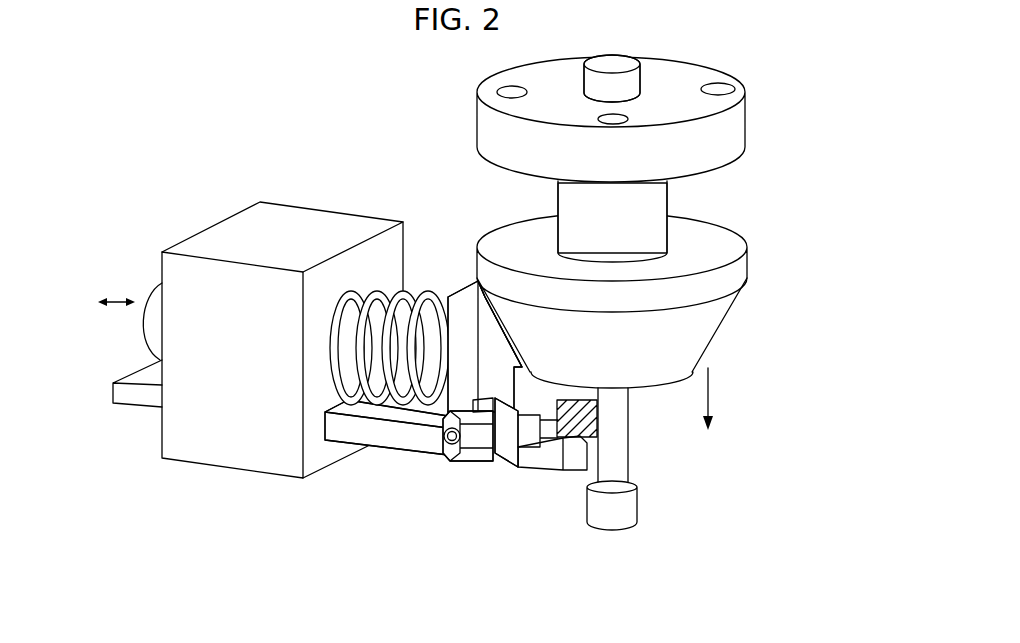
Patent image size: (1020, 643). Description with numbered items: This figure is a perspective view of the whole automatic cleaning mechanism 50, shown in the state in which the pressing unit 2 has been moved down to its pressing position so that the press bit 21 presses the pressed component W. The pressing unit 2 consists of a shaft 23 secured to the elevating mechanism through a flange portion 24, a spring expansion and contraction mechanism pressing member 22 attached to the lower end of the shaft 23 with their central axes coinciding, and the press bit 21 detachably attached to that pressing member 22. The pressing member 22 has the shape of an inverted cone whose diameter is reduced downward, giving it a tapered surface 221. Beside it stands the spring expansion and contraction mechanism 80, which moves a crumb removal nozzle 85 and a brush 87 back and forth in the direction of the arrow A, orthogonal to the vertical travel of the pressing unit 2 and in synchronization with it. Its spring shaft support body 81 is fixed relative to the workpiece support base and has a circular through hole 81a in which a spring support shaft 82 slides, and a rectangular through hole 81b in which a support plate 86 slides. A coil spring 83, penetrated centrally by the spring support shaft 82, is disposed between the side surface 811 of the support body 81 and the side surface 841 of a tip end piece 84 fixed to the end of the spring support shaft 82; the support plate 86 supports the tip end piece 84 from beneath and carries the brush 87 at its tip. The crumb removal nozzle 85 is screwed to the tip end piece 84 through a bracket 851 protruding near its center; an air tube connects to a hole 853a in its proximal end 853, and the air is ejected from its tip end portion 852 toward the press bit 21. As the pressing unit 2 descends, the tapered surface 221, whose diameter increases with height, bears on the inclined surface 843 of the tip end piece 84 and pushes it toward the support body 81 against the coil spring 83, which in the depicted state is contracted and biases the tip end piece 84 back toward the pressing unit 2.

The pressing unit 2 is at (655, 293).
The press bit 21 is at (622, 460).
The spring expansion and contraction mechanism pressing member 22 is at (655, 300).
The tapered surface 221 is at (695, 347).
The shaft 23 is at (648, 200).
The flange portion 24 is at (720, 134).
The pressed component W is at (630, 510).
The automatic cleaning mechanism 50 is at (250, 306).
The spring expansion and contraction mechanism 80 is at (462, 367).
The spring shaft support body 81 is at (258, 363).
The circular through hole 81a is at (360, 288).
The rectangular through hole 81b is at (327, 440).
The side surface 811 is at (312, 460).
The spring support shaft 82 is at (156, 292).
The coil spring 83 is at (408, 300).
The tip end piece 84 is at (455, 335).
The side surface 841 is at (442, 450).
The inclined surface 843 is at (500, 300).
The crumb removal nozzle 85 is at (482, 488).
The bracket 851 is at (476, 452).
The tip end portion 852 is at (568, 450).
The proximal end 853 is at (480, 455).
The hole 853a is at (443, 450).
The support plate 86 is at (389, 439).
The brush 87 is at (570, 470).